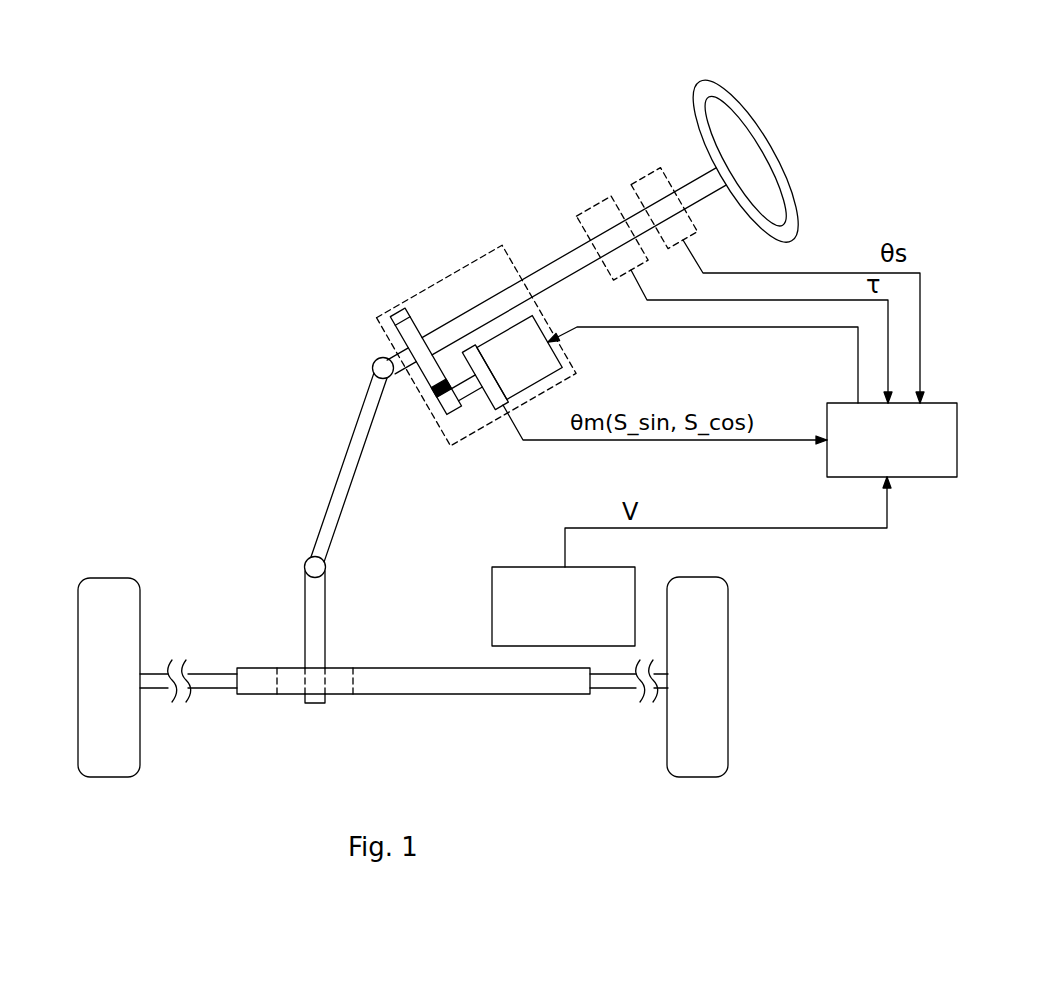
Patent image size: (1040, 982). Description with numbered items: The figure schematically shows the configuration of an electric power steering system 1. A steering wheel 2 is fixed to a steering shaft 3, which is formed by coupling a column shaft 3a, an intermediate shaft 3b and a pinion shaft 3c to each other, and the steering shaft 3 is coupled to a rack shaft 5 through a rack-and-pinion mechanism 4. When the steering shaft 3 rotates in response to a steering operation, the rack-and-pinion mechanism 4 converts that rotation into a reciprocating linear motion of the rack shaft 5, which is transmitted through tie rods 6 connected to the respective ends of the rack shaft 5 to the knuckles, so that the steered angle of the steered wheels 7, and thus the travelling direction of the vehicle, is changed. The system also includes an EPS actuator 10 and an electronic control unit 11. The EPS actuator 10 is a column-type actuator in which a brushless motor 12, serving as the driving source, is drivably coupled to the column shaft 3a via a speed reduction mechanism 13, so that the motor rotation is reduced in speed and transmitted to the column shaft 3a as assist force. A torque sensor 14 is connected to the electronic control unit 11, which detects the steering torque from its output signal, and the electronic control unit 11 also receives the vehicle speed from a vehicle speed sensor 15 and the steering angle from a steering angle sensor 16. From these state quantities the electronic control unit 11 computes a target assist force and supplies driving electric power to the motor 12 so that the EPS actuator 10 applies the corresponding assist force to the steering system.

The electric power steering system 1 is at (992, 126).
The steering wheel 2 is at (777, 139).
The steering shaft 3 is at (331, 308).
The column shaft 3a is at (392, 352).
The intermediate shaft 3b is at (347, 465).
The pinion shaft 3c is at (305, 584).
The rack-and-pinion mechanism 4 is at (340, 668).
The rack shaft 5 is at (408, 668).
The tie rods 6 is at (212, 668).
The steered wheels 7 is at (109, 578).
The EPS actuator 10 is at (438, 278).
The electronic control unit 11 is at (960, 440).
The motor 12 is at (501, 368).
The speed reduction mechanism 13 is at (448, 412).
The torque sensor 14 is at (592, 207).
The vehicle speed sensor 15 is at (530, 565).
The steering angle sensor 16 is at (645, 177).